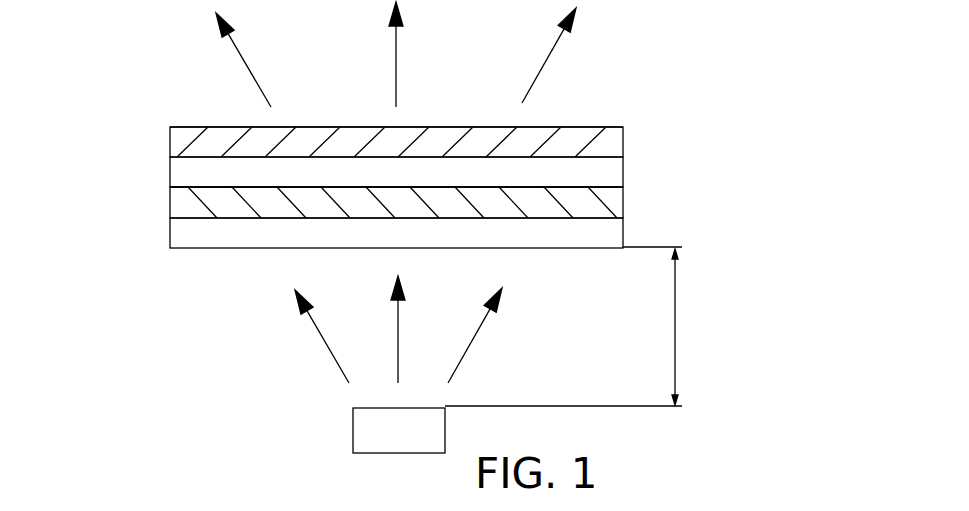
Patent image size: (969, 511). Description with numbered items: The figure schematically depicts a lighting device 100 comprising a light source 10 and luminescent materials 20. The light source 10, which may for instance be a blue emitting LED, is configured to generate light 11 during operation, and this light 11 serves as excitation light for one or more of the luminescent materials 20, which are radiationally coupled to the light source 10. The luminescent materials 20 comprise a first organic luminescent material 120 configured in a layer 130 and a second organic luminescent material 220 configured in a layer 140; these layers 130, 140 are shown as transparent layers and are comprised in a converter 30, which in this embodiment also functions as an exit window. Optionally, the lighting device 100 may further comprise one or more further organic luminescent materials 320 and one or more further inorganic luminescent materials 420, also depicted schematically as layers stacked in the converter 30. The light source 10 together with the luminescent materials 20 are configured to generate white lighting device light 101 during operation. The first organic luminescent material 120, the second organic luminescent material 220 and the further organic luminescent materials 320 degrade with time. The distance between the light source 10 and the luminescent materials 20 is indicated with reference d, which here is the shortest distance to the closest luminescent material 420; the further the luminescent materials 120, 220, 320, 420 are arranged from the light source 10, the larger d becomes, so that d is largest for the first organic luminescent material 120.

The lighting device 100 is at (103, 58).
The white lighting device light 101 is at (549, 53).
The layer 130 is at (626, 133).
The converter 30 is at (660, 129).
The luminescent materials 20 is at (679, 167).
The layer 140 is at (626, 170).
The first organic luminescent material 120 is at (185, 145).
The second organic luminescent material 220 is at (185, 177).
The further organic luminescent material 320 is at (185, 206).
The further inorganic luminescent material 420 is at (185, 237).
The light 11 is at (323, 345).
The light source 10 is at (337, 446).
The distance d is at (565, 326).